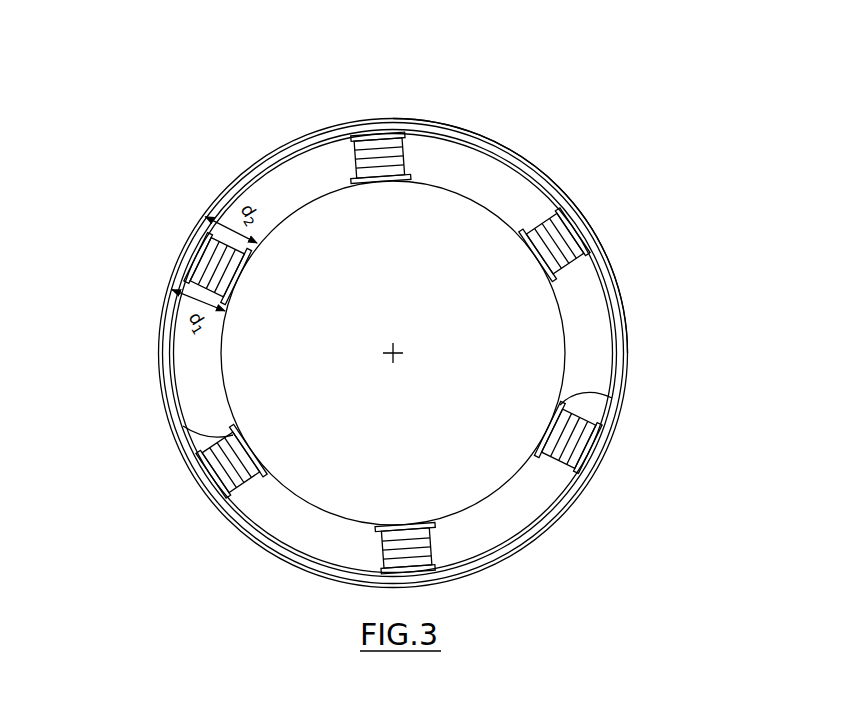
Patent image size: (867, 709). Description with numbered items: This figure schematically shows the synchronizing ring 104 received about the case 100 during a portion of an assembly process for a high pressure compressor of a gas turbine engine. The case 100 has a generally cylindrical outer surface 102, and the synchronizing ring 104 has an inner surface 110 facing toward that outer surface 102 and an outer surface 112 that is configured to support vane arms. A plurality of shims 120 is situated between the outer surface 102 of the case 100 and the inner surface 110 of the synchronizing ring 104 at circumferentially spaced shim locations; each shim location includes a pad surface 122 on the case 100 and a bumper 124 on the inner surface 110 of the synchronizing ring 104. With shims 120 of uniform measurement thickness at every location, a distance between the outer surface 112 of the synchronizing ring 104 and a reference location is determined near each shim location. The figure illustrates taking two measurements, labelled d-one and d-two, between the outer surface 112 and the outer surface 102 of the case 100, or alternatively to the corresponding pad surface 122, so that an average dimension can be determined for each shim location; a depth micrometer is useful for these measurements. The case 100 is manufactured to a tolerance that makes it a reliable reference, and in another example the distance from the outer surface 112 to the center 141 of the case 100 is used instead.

The case 100 is at (527, 268).
The outer surface 102 is at (483, 200).
The synchronizing ring 104 is at (628, 360).
The inner surface 110 is at (536, 193).
The outer surface 112 is at (627, 300).
The shims 120 is at (256, 494).
The pad surface 122 is at (183, 423).
The bumper 124 is at (560, 240).
The center 141 is at (395, 357).